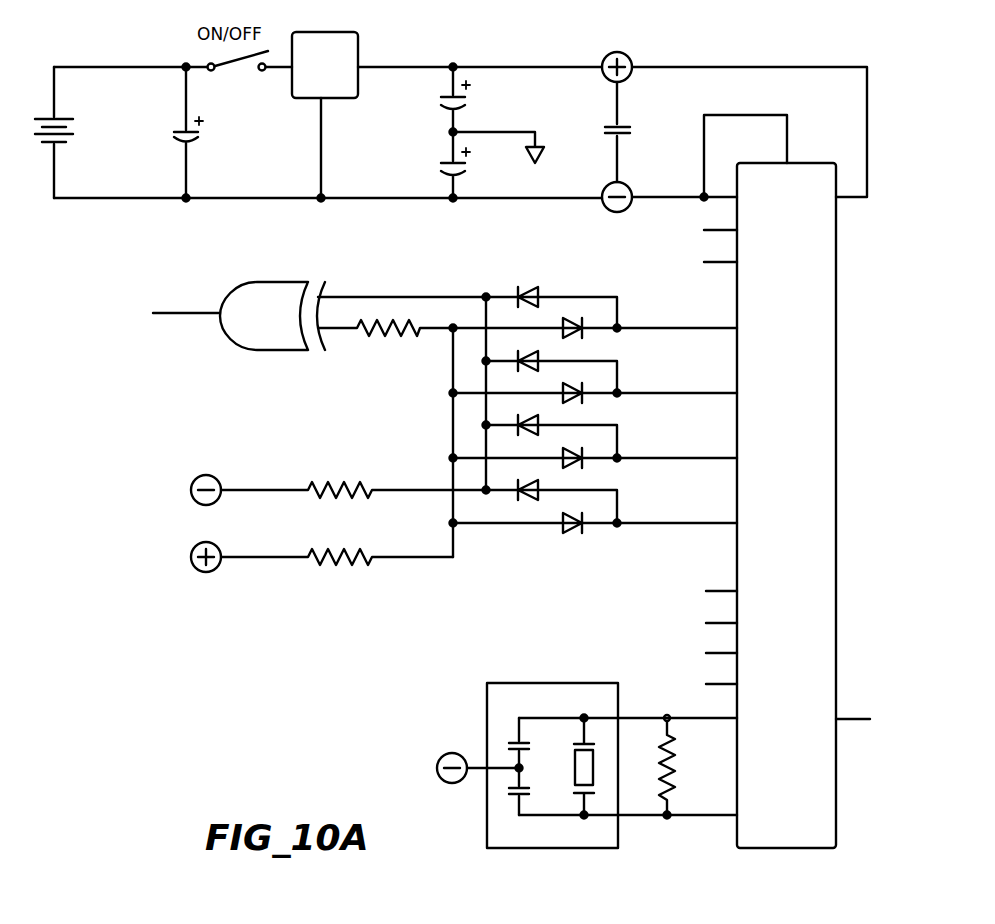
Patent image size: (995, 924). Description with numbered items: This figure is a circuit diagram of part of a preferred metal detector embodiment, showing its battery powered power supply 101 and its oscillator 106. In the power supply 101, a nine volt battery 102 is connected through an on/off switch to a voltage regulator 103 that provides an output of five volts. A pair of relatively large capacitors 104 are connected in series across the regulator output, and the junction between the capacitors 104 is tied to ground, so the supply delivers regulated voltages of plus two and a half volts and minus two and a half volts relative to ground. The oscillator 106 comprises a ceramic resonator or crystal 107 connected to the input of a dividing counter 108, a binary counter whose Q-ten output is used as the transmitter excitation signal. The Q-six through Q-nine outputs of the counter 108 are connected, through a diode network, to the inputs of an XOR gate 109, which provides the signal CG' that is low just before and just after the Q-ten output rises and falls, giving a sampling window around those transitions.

The power supply 101 is at (380, 62).
The battery 102 is at (66, 137).
The voltage regulator 103 is at (297, 100).
The capacitors 104 is at (447, 170).
The oscillator 106 is at (587, 731).
The ceramic resonator or crystal 107 is at (598, 766).
The dividing counter 108 is at (808, 808).
The XOR gate 109 is at (273, 340).